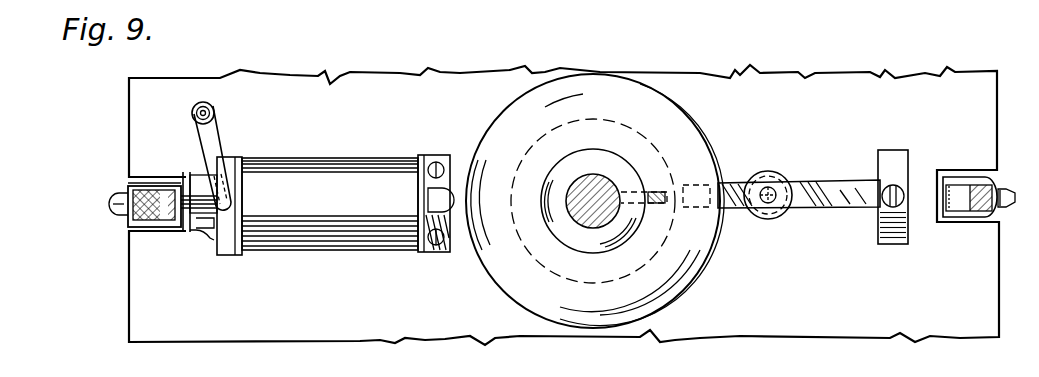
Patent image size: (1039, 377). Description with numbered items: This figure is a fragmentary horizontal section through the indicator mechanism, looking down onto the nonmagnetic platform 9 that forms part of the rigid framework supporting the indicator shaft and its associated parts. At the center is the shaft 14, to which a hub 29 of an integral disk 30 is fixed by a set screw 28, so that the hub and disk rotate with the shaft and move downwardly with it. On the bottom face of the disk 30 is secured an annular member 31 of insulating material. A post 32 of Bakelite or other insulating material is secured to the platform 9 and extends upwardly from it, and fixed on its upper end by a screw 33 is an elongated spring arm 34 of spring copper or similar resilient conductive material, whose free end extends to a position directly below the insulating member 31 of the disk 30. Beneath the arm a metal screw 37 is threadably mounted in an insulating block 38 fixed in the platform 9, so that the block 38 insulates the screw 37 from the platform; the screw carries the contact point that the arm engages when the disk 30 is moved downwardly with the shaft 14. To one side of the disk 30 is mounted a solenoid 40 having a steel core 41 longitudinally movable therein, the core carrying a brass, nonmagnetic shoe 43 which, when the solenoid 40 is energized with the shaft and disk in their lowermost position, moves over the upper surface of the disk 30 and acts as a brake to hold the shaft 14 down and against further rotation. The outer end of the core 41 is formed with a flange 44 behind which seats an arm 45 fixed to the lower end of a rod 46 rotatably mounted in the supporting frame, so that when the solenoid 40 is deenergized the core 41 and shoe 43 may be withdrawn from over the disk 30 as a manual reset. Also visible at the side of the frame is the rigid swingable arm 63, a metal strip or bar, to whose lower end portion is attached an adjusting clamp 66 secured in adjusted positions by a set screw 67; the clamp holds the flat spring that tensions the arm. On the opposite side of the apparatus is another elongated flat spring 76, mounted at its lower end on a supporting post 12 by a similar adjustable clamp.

The platform 9 is at (128, 283).
The post 12 is at (996, 183).
The shaft 14 is at (610, 169).
The set screw 28 is at (655, 190).
The hub 29 is at (610, 142).
The disk 30 is at (712, 257).
The annular member 31 is at (530, 157).
The post 32 is at (893, 234).
The screw 33 is at (900, 186).
The spring arm 34 is at (842, 162).
The screw 37 is at (769, 178).
The insulating block 38 is at (784, 215).
The solenoid 40 is at (327, 166).
The core 41 is at (198, 188).
The shoe 43 is at (452, 214).
The flange 44 is at (209, 226).
The arm 45 is at (274, 140).
The rod 46 is at (213, 108).
The swingable arm 63 is at (128, 228).
The adjusting clamp 66 is at (128, 184).
The set screw 67 is at (117, 198).
The flat spring 76 is at (950, 186).